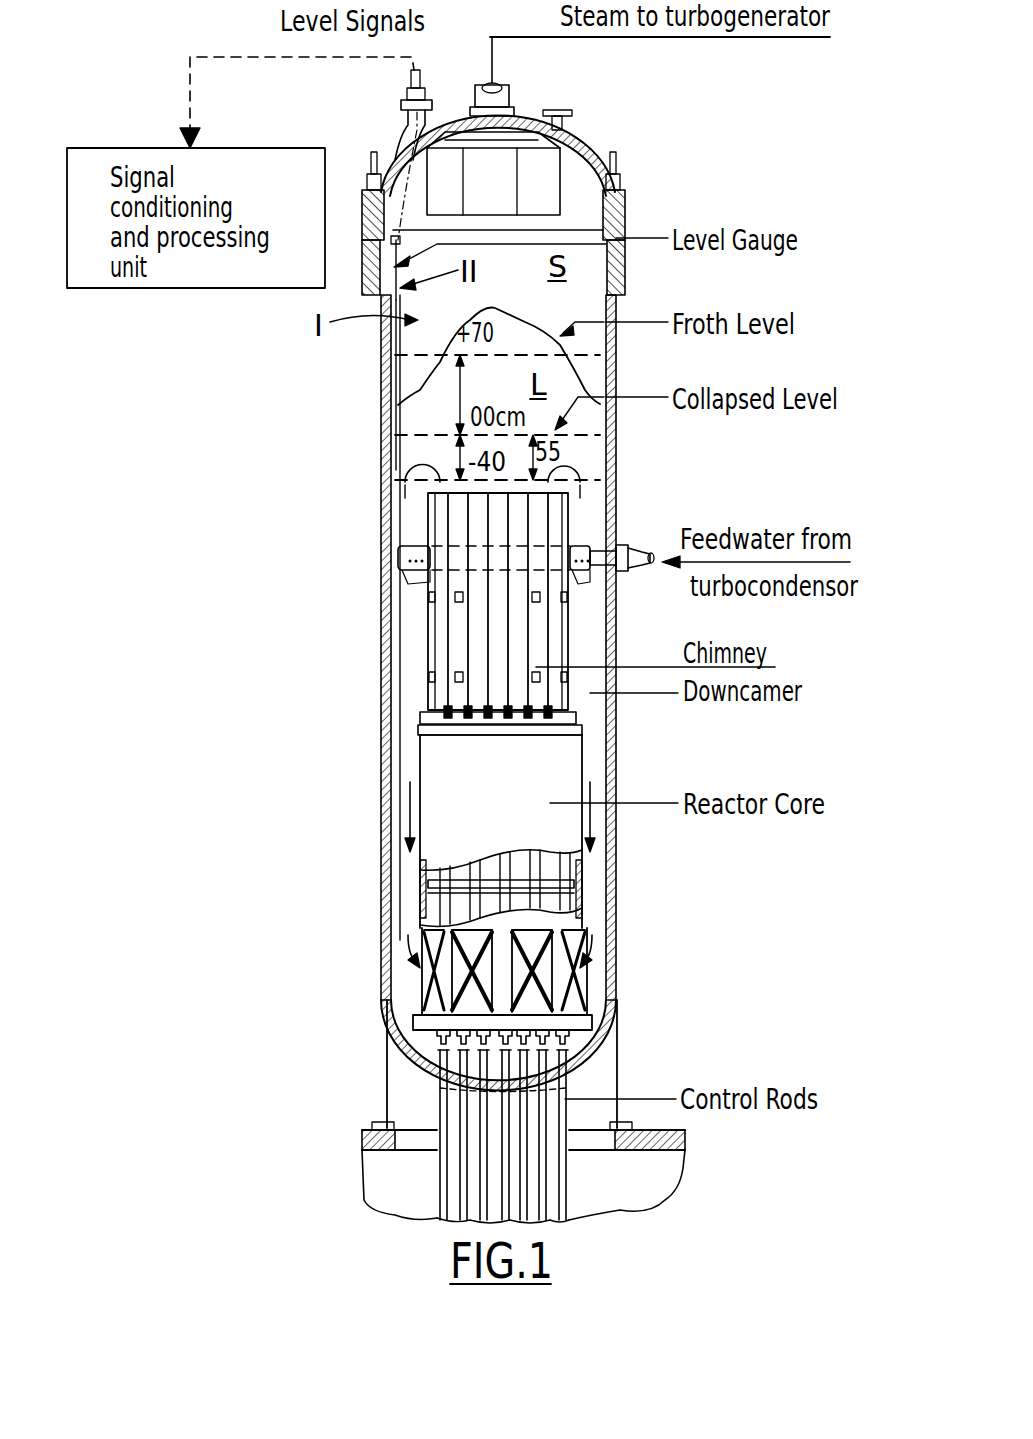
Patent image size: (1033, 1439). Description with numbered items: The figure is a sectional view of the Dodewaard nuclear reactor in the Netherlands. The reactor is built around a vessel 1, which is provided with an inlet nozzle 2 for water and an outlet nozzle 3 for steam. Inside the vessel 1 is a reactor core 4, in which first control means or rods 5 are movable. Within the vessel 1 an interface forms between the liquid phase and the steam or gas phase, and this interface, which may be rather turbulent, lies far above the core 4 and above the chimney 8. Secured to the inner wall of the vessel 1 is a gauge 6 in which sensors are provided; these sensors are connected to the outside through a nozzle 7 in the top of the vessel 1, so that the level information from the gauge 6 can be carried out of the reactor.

The vessel 1 is at (616, 665).
The inlet nozzle 2 is at (647, 550).
The outlet nozzle 3 is at (511, 101).
The reactor core 4 is at (570, 760).
The control rods 5 is at (525, 1157).
The gauge 6 is at (400, 340).
The nozzle 7 is at (408, 128).
The chimney 8 is at (536, 622).